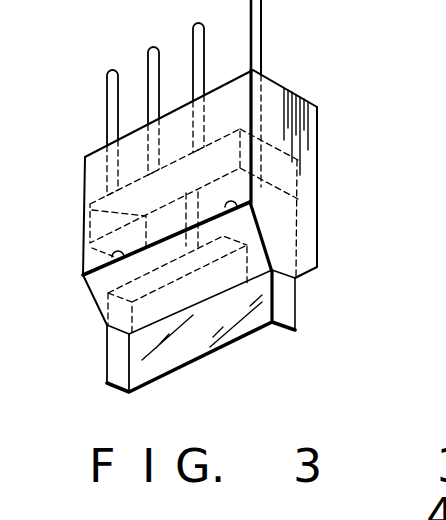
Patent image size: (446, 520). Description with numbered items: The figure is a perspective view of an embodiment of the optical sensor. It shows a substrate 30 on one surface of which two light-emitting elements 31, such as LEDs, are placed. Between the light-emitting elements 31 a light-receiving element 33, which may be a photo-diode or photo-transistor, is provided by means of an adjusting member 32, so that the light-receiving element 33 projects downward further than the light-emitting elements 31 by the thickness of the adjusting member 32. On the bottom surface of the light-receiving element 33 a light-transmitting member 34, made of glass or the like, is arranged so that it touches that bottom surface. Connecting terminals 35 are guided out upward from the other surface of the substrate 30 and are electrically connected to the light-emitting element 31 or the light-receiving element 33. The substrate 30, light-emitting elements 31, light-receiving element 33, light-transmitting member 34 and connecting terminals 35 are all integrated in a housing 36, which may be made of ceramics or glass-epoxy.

The substrate 30 is at (300, 172).
The light-emitting element 31 is at (86, 255).
The adjusting member 32 is at (84, 206).
The light-receiving element 33 is at (106, 294).
The light-transmitting member 34 is at (290, 311).
The connecting terminal 35 is at (287, 22).
The housing 36 is at (318, 100).